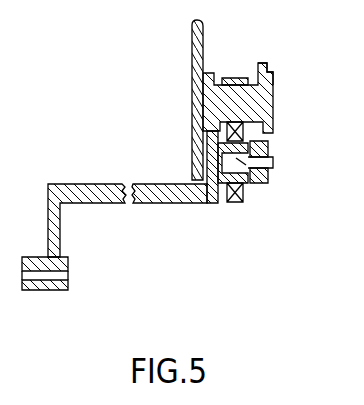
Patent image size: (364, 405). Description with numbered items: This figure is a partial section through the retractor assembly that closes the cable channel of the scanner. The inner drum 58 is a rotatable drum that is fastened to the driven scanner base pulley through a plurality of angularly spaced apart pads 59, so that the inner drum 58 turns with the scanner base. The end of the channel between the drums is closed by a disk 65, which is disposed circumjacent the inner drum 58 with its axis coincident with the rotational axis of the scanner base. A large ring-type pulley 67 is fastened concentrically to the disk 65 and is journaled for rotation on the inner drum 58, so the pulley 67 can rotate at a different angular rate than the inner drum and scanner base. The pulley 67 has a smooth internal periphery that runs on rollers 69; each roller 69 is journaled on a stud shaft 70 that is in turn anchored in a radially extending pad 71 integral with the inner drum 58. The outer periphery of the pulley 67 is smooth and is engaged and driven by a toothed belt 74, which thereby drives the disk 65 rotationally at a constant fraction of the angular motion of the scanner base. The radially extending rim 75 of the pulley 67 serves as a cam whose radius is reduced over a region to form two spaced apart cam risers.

The inner drum 58 is at (83, 182).
The pads 59 is at (50, 290).
The disk 65 is at (192, 49).
The ring-type pulley 67 is at (276, 97).
The rollers 69 is at (239, 204).
The stud shafts 70 is at (260, 178).
The radially extending pads 71 is at (212, 204).
The toothed belt 74 is at (239, 78).
The radially extending rim 75 is at (263, 64).